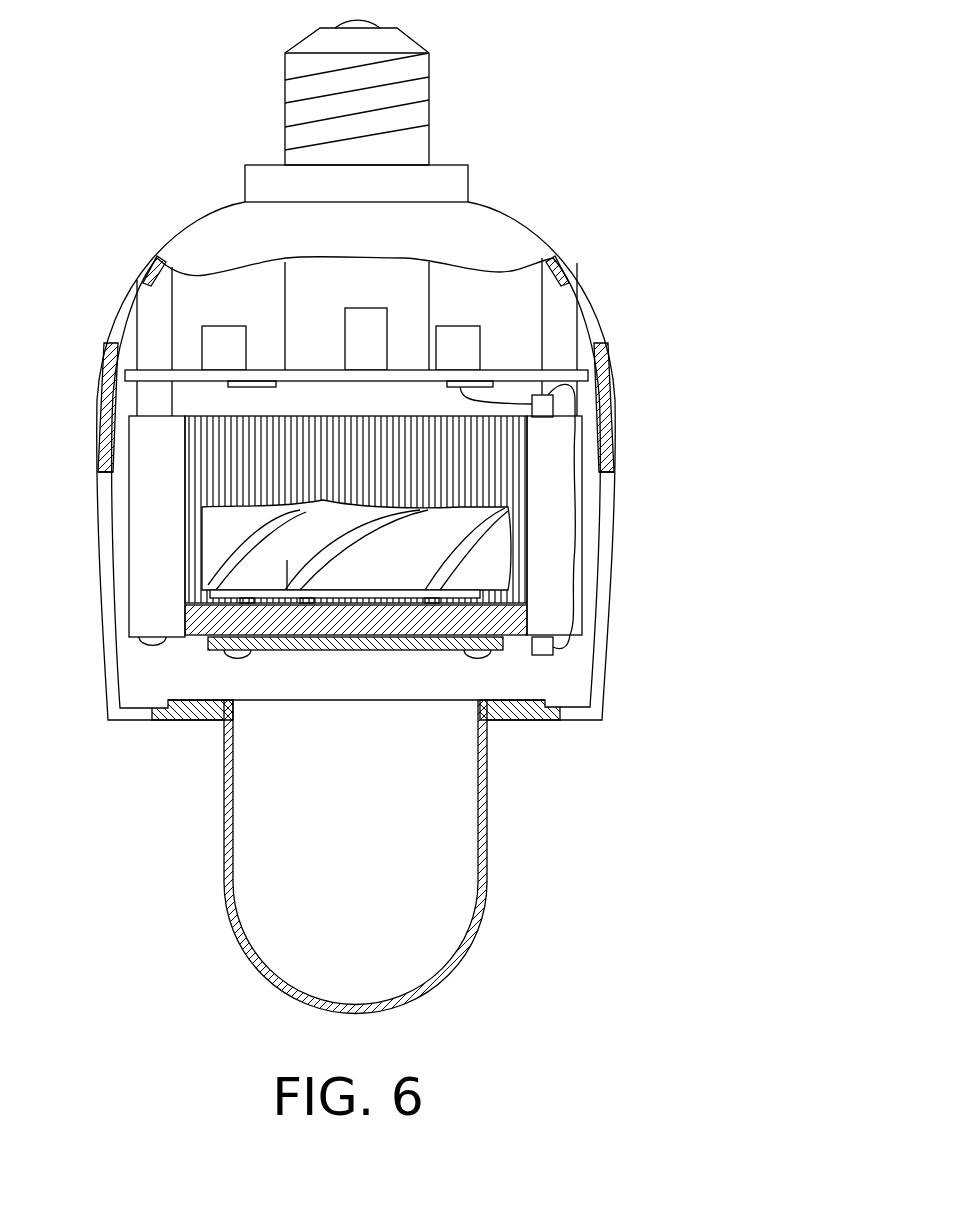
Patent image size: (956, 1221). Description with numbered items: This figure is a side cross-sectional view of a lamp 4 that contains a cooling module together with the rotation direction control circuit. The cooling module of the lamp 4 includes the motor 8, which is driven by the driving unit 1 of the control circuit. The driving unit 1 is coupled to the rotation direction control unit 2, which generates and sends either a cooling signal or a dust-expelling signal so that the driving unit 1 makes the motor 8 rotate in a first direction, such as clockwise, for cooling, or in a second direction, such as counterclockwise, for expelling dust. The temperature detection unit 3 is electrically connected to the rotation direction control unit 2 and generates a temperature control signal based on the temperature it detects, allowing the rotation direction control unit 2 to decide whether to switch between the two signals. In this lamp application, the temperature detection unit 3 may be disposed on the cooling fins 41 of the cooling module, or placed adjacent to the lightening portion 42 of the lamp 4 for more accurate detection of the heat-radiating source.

The lamp 4 is at (548, 156).
The driving unit 1 is at (500, 300).
The rotation direction control unit 2 is at (462, 398).
The temperature detection unit 3 is at (548, 400).
The motor 8 is at (488, 557).
The cooling fins 41 is at (140, 601).
The lightening portion 42 is at (277, 648).